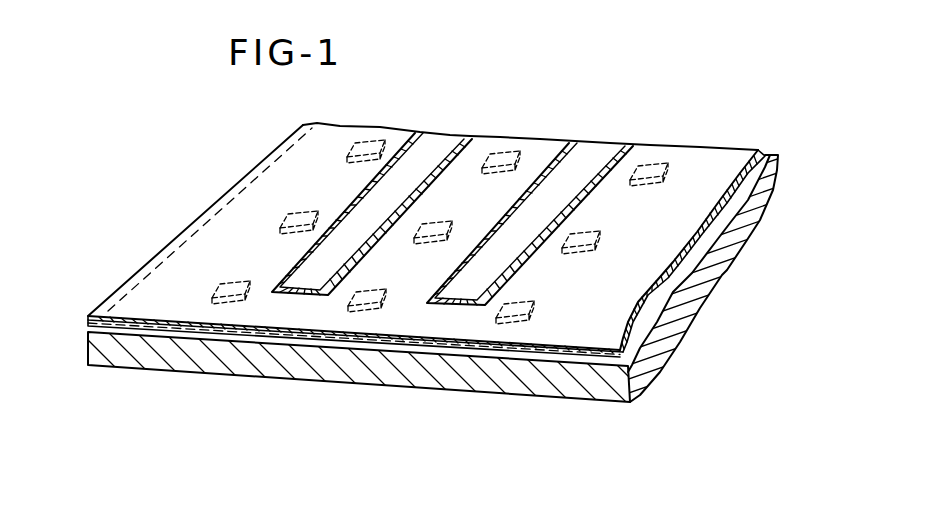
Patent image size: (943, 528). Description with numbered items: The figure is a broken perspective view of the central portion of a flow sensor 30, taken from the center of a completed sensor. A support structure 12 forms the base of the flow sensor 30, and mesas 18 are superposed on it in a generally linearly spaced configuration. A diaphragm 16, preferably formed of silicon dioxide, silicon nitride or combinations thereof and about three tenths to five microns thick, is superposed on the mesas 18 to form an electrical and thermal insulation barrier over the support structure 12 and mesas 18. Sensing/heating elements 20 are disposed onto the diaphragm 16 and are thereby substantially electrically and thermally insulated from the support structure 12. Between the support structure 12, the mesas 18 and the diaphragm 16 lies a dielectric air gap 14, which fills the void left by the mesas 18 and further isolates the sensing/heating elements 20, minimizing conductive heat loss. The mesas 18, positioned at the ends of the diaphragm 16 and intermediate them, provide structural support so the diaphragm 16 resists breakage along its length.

The support structure 12 is at (127, 355).
The dielectric air gap 14 is at (93, 324).
The diaphragm 16 is at (581, 348).
The mesas 18 is at (306, 210).
The sensing/heating elements 20 is at (557, 163).
The flow sensor 30 is at (614, 110).